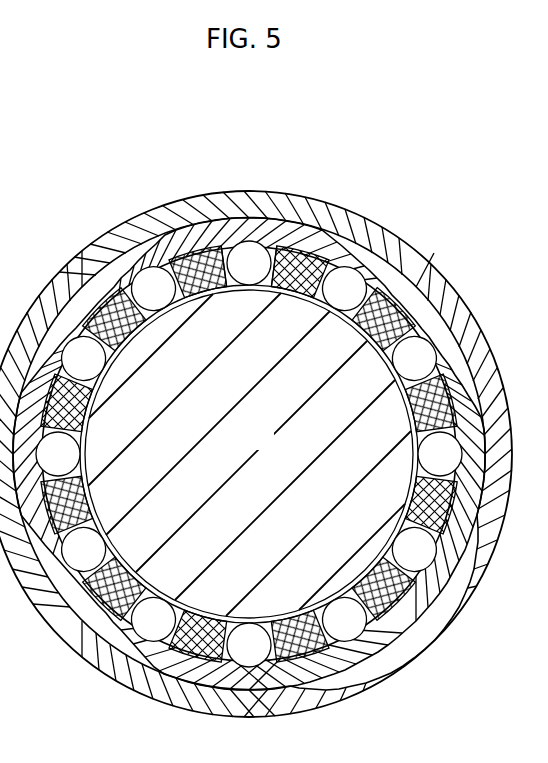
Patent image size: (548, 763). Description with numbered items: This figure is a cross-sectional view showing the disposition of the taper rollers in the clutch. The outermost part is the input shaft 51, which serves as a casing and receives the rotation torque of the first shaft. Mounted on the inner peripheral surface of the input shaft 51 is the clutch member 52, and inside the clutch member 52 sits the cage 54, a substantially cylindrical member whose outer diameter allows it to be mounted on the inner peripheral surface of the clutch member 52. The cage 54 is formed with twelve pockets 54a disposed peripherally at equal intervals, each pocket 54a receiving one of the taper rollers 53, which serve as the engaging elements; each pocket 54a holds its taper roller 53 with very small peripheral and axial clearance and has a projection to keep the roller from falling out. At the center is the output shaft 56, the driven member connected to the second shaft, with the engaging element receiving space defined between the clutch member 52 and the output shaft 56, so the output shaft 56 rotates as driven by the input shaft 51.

The input shaft 51 is at (440, 270).
The clutch member 52 is at (183, 232).
The taper rollers 53 is at (249, 283).
The cage 54 is at (280, 280).
The pockets 54a is at (236, 256).
The output shaft 56 is at (249, 454).